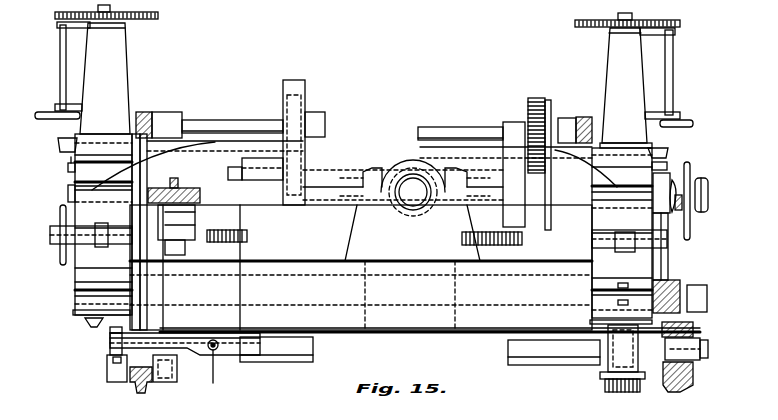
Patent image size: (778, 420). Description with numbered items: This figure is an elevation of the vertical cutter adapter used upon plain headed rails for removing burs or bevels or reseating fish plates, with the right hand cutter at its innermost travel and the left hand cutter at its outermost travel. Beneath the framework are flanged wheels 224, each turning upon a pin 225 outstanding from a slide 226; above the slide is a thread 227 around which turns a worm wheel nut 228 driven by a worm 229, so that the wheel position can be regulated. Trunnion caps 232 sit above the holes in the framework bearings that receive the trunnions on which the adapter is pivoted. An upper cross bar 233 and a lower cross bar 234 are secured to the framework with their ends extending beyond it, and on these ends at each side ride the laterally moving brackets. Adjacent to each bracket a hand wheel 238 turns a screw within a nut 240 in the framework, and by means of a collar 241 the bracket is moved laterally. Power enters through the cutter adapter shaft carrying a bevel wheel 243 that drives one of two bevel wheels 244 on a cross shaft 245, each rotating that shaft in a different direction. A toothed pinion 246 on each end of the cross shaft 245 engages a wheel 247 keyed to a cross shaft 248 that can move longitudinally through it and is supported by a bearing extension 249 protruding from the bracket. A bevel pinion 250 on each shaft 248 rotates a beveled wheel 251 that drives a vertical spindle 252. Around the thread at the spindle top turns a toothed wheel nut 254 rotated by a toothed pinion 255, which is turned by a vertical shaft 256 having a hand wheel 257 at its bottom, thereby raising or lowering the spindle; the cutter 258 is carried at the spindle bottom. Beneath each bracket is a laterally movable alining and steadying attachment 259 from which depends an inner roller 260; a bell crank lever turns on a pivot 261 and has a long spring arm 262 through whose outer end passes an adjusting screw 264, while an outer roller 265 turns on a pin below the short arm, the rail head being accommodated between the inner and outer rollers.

The flanged wheel 224 is at (693, 330).
The pin 225 is at (711, 350).
The slide 226 is at (711, 316).
The thread 227 is at (161, 231).
The worm wheel nut 228 is at (200, 180).
The worm 229 is at (166, 177).
The trunnion cap 232 is at (60, 150).
The upper cross bar 233 is at (75, 200).
The lower cross bar 234 is at (73, 312).
The hand wheel 238 is at (60, 217).
The nut 240 is at (364, 228).
The collar 241 is at (95, 245).
The bevel wheel 243 is at (415, 170).
The bevel wheel 244 is at (378, 168).
The cross shaft 245 is at (409, 160).
The toothed pinion 246 is at (290, 172).
The wheel 247 is at (283, 122).
The cross shaft 248 is at (228, 128).
The bearing extension 249 is at (172, 125).
The bevel pinion 250 is at (145, 112).
The beveled wheel 251 is at (58, 142).
The vertical spindle 252 is at (85, 322).
The toothed wheel nut 254 is at (157, 18).
The toothed pinion 255 is at (57, 22).
The vertical shaft 256 is at (60, 67).
The hand wheel 257 is at (55, 108).
The cutter 258 is at (605, 385).
The alining and steadying attachment 259 is at (402, 298).
The inner roller 260 is at (177, 372).
The pivot 261 is at (110, 335).
The long spring arm 262 is at (113, 352).
The adjusting screw 264 is at (216, 370).
The outer roller 265 is at (121, 384).